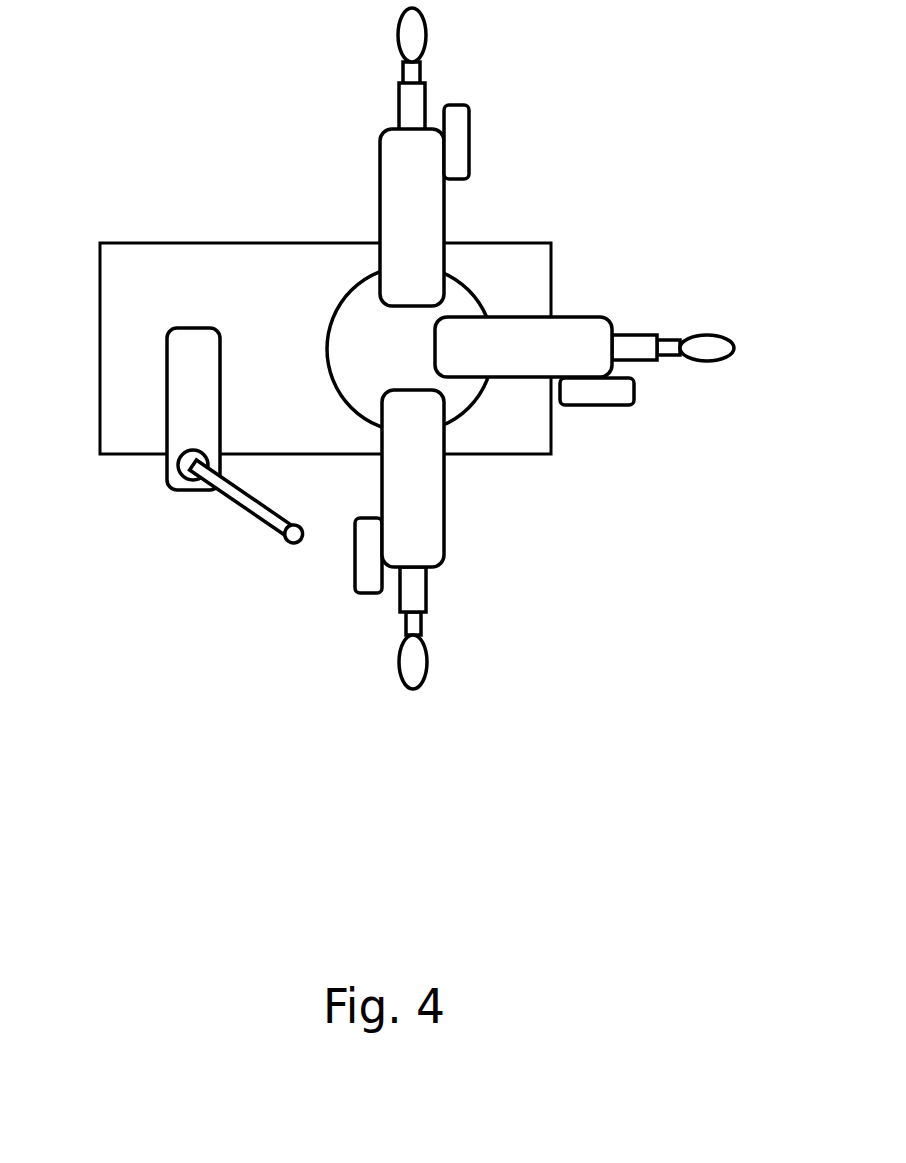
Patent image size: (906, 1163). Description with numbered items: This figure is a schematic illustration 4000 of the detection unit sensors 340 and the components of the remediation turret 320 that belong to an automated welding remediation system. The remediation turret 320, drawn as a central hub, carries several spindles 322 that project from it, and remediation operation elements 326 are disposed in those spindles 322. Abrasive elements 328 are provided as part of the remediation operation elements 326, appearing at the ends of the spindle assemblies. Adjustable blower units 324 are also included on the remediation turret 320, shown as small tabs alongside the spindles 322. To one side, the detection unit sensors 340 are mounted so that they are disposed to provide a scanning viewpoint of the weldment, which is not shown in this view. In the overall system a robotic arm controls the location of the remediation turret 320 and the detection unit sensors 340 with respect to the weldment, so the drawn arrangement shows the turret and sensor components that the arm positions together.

The remediation turret 320 is at (400, 359).
The spindles 322 is at (380, 188).
The adjustable blower units 324 is at (470, 140).
The remediation operation elements 326 is at (427, 597).
The abrasive elements 328 is at (697, 335).
The detection unit sensors 340 is at (242, 513).
The schematic illustration 4000 is at (406, 804).